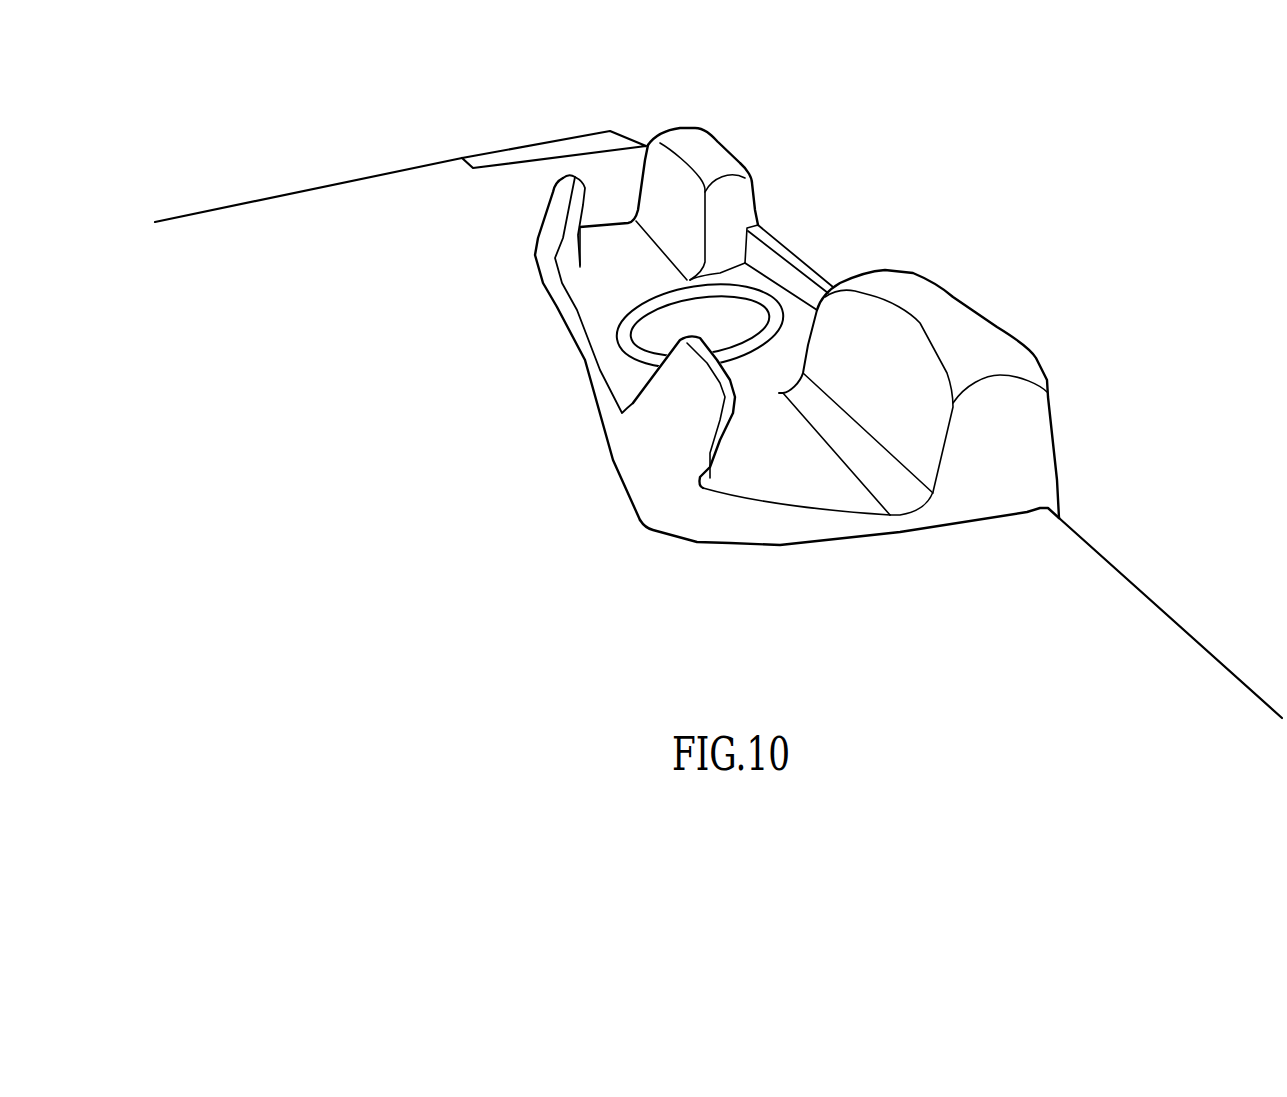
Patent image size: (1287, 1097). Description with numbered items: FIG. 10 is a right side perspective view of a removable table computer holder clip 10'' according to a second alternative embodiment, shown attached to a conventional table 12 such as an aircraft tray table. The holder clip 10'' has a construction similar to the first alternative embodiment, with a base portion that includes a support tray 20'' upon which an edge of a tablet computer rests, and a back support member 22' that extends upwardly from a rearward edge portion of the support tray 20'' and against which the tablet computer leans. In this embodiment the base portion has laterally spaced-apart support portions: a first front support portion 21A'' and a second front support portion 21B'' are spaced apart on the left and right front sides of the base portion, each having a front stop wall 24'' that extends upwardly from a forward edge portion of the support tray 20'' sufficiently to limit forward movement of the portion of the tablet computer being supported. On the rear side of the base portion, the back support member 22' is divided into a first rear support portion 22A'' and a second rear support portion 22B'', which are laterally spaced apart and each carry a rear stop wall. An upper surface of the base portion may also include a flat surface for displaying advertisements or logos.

The removable table computer holder clip 10'' is at (802, 361).
The conventional table 12 is at (356, 398).
The support tray 20'' is at (835, 463).
The first front support portion 21A'' is at (508, 347).
The second front support portion 21B'' is at (631, 470).
The back support member 22' is at (613, 168).
The first rear support portion 22A'' is at (709, 174).
The second rear support portion 22B'' is at (948, 386).
The front stop wall 24'' is at (535, 158).